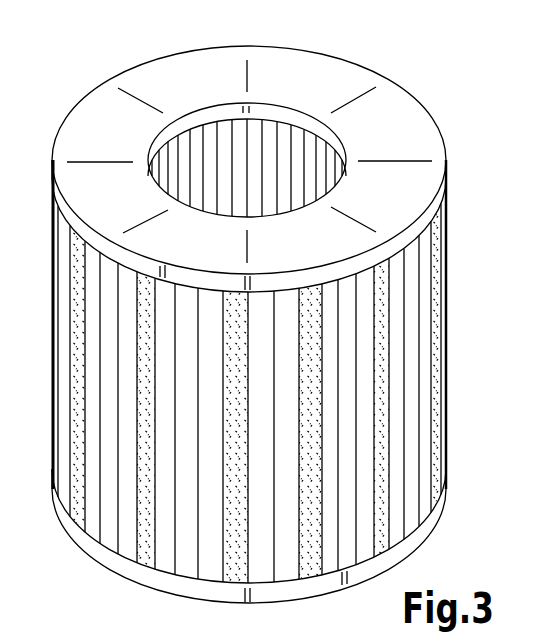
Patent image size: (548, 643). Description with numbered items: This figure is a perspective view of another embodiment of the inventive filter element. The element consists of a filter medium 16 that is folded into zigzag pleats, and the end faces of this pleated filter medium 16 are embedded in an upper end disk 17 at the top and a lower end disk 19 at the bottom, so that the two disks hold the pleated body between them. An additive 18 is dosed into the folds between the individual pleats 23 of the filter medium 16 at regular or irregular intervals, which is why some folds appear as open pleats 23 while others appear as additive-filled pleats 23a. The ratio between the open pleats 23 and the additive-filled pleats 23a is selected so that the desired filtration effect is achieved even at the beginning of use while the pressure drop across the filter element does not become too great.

The filter medium 16 is at (402, 302).
The upper end disk 17 is at (100, 97).
The additive 18 is at (80, 383).
The lower end disk 19 is at (80, 540).
The pleats 23 is at (418, 361).
The additive-filled pleats 23a is at (381, 421).